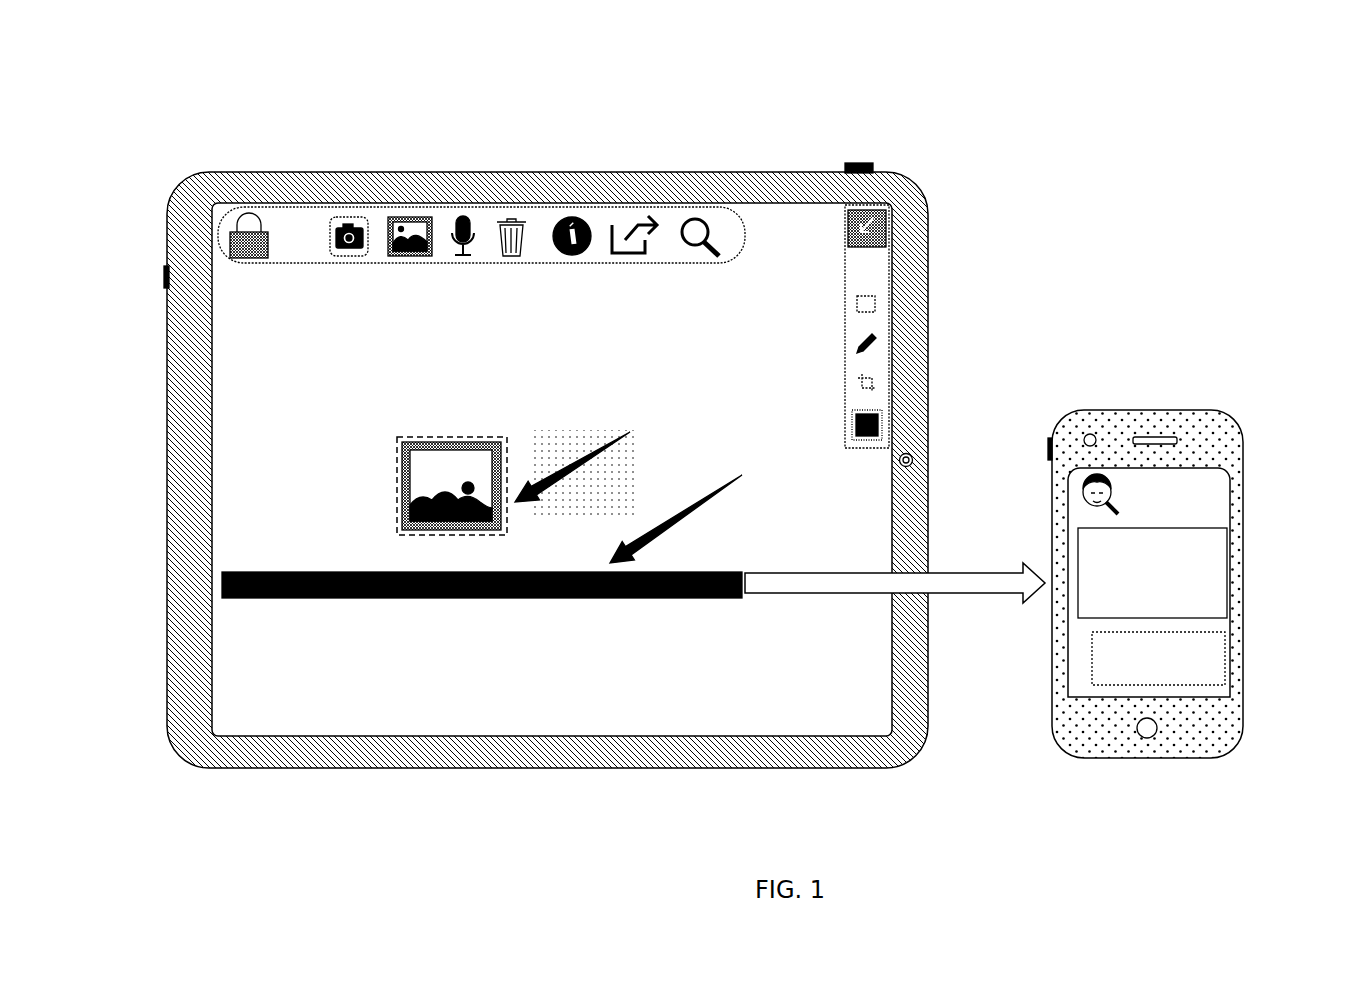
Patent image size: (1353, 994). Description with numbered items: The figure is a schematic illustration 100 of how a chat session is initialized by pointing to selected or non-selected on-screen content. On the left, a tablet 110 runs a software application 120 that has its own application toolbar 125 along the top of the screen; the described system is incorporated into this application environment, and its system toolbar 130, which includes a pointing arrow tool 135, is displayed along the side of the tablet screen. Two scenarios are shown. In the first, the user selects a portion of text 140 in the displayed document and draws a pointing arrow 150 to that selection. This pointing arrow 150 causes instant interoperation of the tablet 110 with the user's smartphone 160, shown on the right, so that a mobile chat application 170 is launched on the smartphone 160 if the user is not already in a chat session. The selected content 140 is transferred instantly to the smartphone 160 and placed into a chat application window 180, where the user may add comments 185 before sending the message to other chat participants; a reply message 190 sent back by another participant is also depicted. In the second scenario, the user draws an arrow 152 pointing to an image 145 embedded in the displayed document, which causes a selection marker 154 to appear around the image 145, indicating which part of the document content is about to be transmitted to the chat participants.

The schematic illustration 100 is at (1197, 83).
The tablet 110 is at (196, 160).
The software application 120 is at (220, 381).
The application toolbar 125 is at (304, 223).
The system toolbar 130 is at (877, 281).
The pointing arrow tool 135 is at (881, 222).
The portion of text 140 is at (218, 583).
The image 145 is at (433, 470).
The pointing arrow 150 is at (673, 544).
The arrow 152 is at (622, 449).
The selection marker 154 is at (394, 462).
The smartphone 160 is at (1067, 403).
The mobile chat application 170 is at (1200, 478).
The chat application window 180 is at (1210, 570).
The comments 185 is at (1218, 608).
The reply message 190 is at (1210, 665).